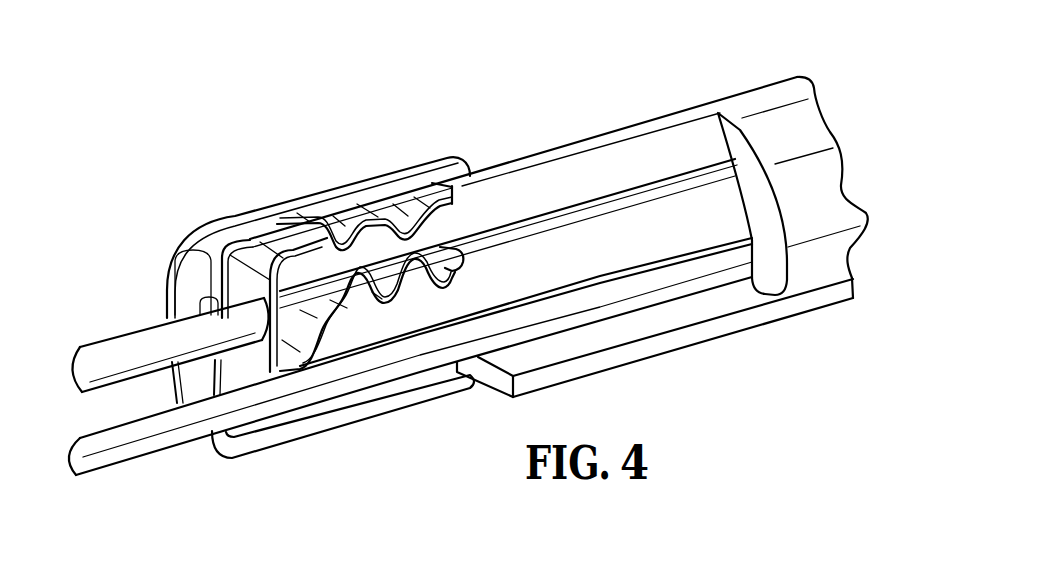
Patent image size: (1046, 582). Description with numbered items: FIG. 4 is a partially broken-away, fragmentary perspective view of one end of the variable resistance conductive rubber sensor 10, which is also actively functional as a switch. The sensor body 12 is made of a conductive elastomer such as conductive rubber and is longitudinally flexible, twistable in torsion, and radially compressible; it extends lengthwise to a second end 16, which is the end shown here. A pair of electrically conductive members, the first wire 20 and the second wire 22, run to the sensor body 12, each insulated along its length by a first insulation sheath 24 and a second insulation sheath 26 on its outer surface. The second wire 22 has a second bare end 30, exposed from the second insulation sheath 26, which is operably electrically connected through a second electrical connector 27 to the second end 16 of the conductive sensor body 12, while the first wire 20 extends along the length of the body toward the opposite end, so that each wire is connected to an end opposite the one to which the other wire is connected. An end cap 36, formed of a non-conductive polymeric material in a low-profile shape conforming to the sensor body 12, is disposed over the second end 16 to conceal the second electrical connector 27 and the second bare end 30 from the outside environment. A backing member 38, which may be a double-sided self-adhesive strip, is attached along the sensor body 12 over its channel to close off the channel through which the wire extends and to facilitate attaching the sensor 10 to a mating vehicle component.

The sensor 10 is at (657, 66).
The sensor body 12 is at (763, 124).
The second end 16 is at (297, 270).
The first wire 20 is at (100, 474).
The second wire 22 is at (80, 350).
The first insulation sheath 24 is at (133, 452).
The second insulation sheath 26 is at (135, 345).
The second electrical connector 27 is at (280, 243).
The second bare end 30 is at (447, 247).
The end cap 36 is at (240, 222).
The backing member 38 is at (727, 323).